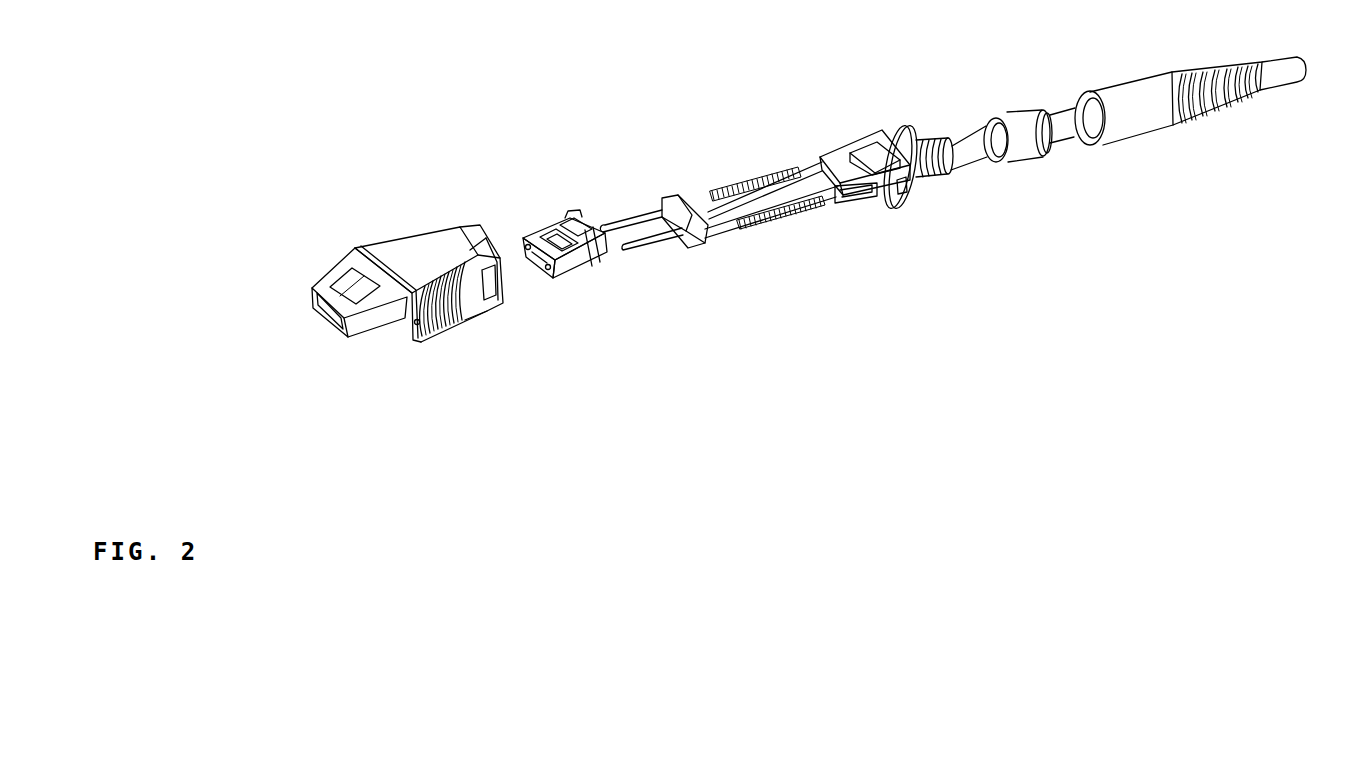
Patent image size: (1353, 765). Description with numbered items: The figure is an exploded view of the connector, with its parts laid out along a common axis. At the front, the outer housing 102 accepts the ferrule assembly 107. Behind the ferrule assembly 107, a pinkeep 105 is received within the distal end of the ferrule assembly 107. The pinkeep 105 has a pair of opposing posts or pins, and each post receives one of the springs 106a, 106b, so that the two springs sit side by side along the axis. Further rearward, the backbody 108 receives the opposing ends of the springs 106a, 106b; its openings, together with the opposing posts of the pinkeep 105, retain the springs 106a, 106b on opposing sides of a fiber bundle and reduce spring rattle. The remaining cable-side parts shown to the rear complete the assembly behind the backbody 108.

The outer housing 102 is at (330, 286).
The pinkeep 105 is at (639, 191).
The spring 106a is at (732, 182).
The spring 106b is at (781, 212).
The ferrule assembly 107 is at (541, 221).
The backbody 108 is at (886, 204).